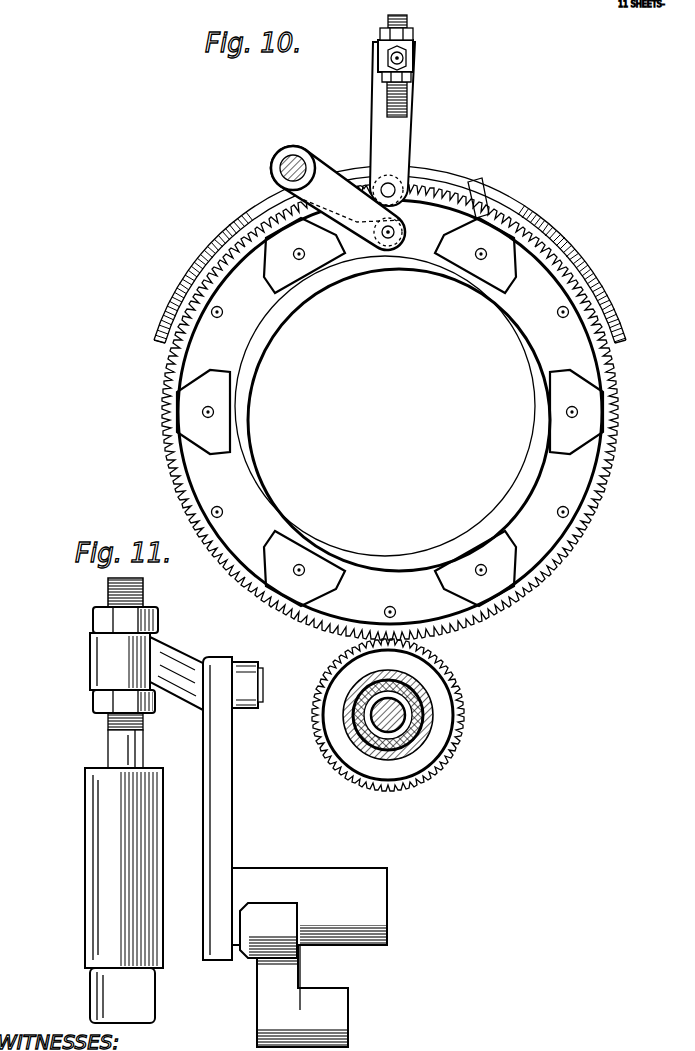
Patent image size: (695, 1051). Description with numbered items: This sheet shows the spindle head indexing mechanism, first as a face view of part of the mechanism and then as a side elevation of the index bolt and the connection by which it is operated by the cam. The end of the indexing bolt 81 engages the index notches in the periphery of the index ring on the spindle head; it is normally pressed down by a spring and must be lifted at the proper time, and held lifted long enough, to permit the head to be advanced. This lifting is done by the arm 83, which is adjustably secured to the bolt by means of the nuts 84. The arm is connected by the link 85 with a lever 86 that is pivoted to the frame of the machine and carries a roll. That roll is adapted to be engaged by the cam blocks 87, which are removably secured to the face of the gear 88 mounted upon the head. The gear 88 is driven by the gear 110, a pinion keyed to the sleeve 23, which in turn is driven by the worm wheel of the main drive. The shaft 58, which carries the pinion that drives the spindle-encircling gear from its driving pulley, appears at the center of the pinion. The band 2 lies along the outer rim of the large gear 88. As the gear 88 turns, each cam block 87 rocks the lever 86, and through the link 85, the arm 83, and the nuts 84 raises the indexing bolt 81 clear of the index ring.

In FIG. 10, the casing band 2 is at (573, 245).
In FIG. 10, the gear 88 is at (618, 384).
In FIG. 10, the cam blocks 87 is at (480, 190).
In FIG. 10, the lever 86 is at (318, 180).
In FIG. 11, the lever 86 is at (270, 992).
In FIG. 10, the link 85 is at (392, 124).
In FIG. 11, the link 85 is at (232, 805).
In FIG. 10, the arm 83 is at (378, 62).
In FIG. 11, the arm 83 is at (176, 664).
In FIG. 10, the nuts 84 is at (415, 34).
In FIG. 11, the nuts 84 is at (93, 628).
In FIG. 10, the gear 110 is at (457, 683).
In FIG. 10, the sleeve 23 is at (433, 707).
In FIG. 10, the shaft 58 is at (427, 725).
In FIG. 11, the indexing bolt 81 is at (88, 978).